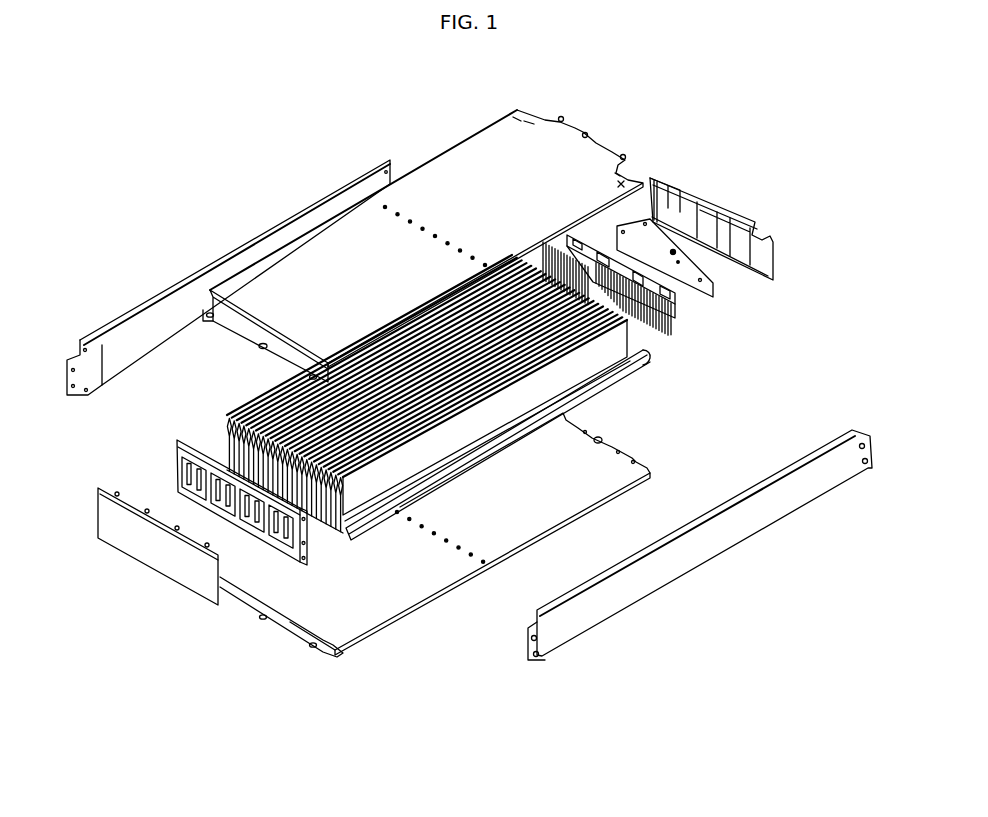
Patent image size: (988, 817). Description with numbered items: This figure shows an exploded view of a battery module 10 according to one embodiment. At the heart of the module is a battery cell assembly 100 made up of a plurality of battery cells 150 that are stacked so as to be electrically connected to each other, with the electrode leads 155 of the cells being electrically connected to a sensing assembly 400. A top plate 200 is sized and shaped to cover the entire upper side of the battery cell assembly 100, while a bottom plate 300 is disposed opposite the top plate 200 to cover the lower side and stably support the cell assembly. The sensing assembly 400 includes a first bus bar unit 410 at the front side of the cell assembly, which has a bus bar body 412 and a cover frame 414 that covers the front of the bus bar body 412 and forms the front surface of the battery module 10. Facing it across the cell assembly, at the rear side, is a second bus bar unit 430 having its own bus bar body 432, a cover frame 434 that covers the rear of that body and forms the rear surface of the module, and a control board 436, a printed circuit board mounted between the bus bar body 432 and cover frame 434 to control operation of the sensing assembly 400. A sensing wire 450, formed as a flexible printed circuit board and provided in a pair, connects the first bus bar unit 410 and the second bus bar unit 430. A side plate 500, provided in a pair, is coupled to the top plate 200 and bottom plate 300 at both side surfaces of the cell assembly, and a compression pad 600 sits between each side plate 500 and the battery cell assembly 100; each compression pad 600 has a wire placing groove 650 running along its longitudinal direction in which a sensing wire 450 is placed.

The battery module 10 is at (205, 156).
The battery cell assembly 100 is at (212, 405).
The battery cell 150 is at (257, 400).
The electrode lead 155 is at (210, 443).
The top plate 200 is at (490, 137).
The bottom plate 300 is at (367, 637).
The sensing assembly 400 is at (130, 576).
The first bus bar unit 410 is at (107, 483).
The bus bar body 412 is at (275, 562).
The cover frame 414 is at (193, 582).
The second bus bar unit 430 is at (732, 194).
The bus bar body 432 is at (673, 332).
The cover frame 434 is at (775, 265).
The control board 436 is at (715, 295).
The sensing wire 450 is at (317, 520).
The side plate 500 is at (132, 313).
The compression pad 600 is at (587, 387).
The wire placing groove 650 is at (620, 363).